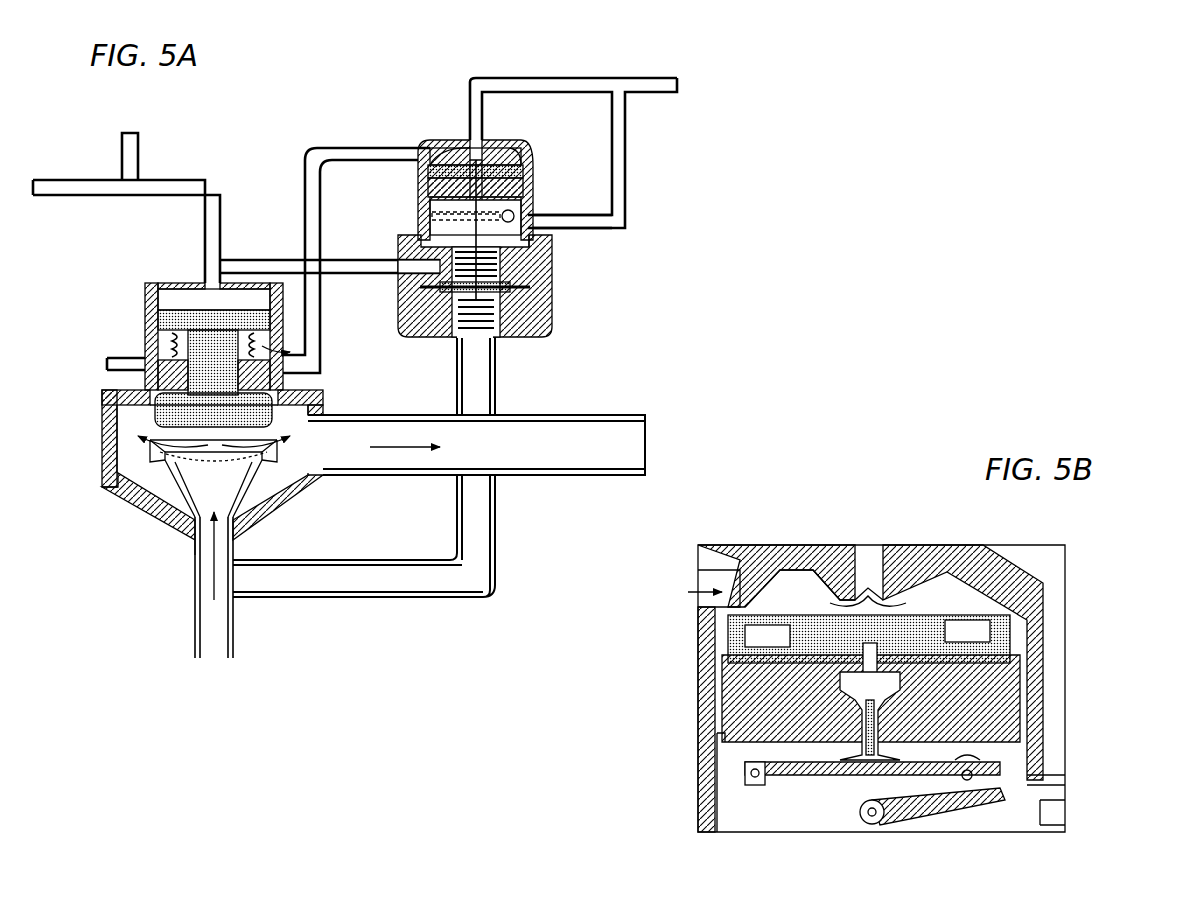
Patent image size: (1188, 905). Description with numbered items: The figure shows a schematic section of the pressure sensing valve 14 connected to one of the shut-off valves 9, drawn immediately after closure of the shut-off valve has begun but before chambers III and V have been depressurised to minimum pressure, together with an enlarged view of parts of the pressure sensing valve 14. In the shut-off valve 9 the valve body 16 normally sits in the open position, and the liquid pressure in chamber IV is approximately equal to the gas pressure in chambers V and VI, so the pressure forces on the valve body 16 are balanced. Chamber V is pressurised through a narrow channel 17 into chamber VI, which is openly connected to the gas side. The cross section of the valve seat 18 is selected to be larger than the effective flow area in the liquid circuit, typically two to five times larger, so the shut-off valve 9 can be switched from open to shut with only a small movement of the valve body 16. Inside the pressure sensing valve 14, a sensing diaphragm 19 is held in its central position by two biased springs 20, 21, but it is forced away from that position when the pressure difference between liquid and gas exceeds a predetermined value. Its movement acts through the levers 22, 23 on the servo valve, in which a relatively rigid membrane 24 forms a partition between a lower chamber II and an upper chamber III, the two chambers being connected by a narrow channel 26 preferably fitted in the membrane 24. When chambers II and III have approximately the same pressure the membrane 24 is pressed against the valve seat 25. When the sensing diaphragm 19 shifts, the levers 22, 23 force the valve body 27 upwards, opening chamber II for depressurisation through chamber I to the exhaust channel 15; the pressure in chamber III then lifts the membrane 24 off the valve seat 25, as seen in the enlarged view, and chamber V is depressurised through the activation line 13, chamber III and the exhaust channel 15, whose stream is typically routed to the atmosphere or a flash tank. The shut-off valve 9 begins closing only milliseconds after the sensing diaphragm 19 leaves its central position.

In FIG. 5A, the shut-off valve 9 is at (290, 512).
In FIG. 5A, the activation line 13 is at (381, 155).
In FIG. 5A, the pressure sensing valve 14 is at (540, 332).
In FIG. 5A, the exhaust channel 15 is at (683, 82).
In FIG. 5A, the valve body 16 is at (160, 322).
In FIG. 5A, the narrow channel 17 is at (240, 300).
In FIG. 5A, the valve seat 18 is at (104, 486).
In FIG. 5A, the sensing diaphragm 19 is at (555, 315).
In FIG. 5A, the biased spring 20 is at (500, 335).
In FIG. 5A, the biased spring 21 is at (555, 285).
In FIG. 5A, the lever 22 is at (560, 242).
In FIG. 5B, the lever 22 is at (985, 800).
In FIG. 5A, the lever 23 is at (626, 224).
In FIG. 5B, the lever 23 is at (990, 765).
In FIG. 5A, the membrane 24 is at (522, 150).
In FIG. 5B, the membrane 24 is at (1007, 575).
In FIG. 5A, the valve seat 25 is at (487, 165).
In FIG. 5B, the valve seat 25 is at (900, 600).
In FIG. 5A, the narrow channel 26 is at (427, 176).
In FIG. 5B, the narrow channel 26 is at (728, 642).
In FIG. 5A, the valve body 27 is at (448, 198).
In FIG. 5B, the valve body 27 is at (860, 684).
In FIG. 5A, the chamber I is at (556, 245).
In FIG. 5A, the lower chamber II is at (537, 192).
In FIG. 5B, the lower chamber II is at (935, 686).
In FIG. 5A, the upper chamber III is at (452, 155).
In FIG. 5B, the upper chamber III is at (803, 572).
In FIG. 5A, the chamber IV is at (130, 418).
In FIG. 5A, the chamber V is at (168, 353).
In FIG. 5A, the chamber VI is at (175, 300).